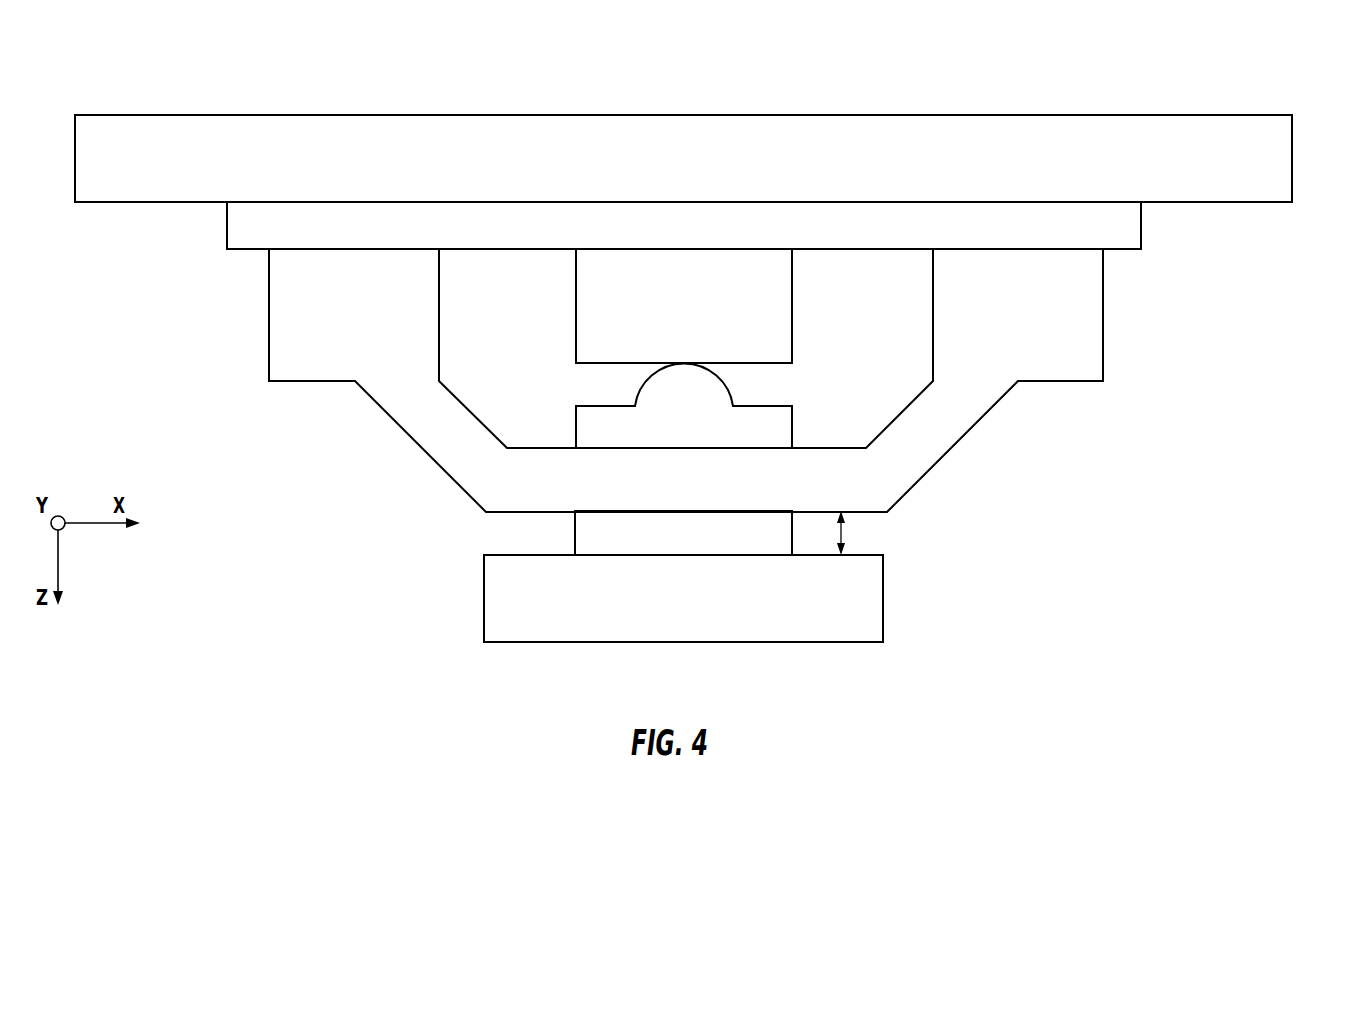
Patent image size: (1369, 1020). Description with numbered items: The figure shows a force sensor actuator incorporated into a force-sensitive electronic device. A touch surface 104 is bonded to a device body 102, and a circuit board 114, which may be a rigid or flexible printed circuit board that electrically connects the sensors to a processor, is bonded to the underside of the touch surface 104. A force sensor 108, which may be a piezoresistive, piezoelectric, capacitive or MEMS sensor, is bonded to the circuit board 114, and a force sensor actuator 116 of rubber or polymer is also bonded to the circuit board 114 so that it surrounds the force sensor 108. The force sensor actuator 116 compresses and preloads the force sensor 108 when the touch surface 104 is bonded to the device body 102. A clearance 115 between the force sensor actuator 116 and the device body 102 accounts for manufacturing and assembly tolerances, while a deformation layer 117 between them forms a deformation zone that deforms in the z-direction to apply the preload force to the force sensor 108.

The device body 102 is at (493, 592).
The touch surface 104 is at (1280, 172).
The force sensor 108 is at (803, 329).
The circuit board 114 is at (1150, 223).
The clearance 115 is at (856, 531).
The force sensor actuator 116 is at (1064, 347).
The deformation layer 117 is at (566, 535).